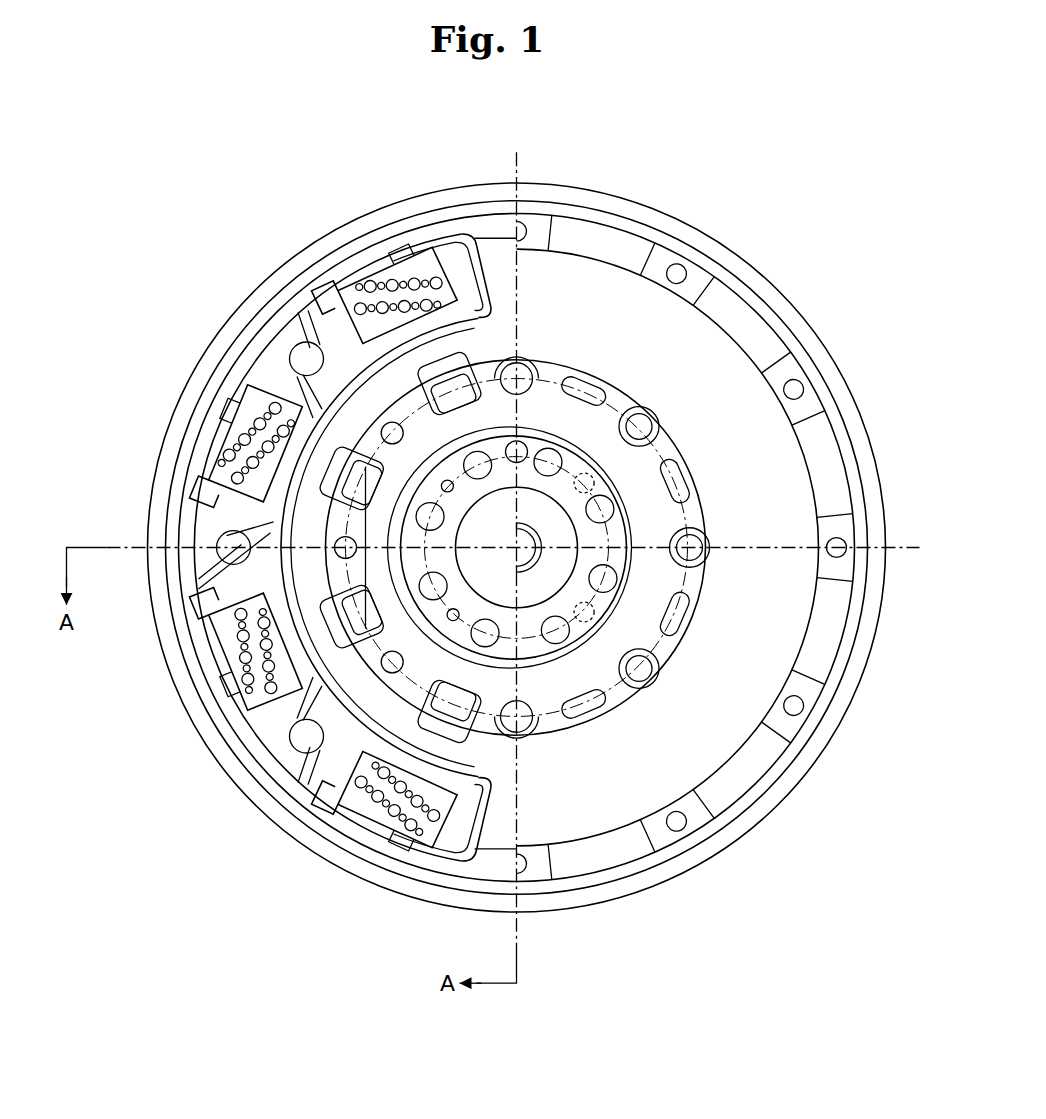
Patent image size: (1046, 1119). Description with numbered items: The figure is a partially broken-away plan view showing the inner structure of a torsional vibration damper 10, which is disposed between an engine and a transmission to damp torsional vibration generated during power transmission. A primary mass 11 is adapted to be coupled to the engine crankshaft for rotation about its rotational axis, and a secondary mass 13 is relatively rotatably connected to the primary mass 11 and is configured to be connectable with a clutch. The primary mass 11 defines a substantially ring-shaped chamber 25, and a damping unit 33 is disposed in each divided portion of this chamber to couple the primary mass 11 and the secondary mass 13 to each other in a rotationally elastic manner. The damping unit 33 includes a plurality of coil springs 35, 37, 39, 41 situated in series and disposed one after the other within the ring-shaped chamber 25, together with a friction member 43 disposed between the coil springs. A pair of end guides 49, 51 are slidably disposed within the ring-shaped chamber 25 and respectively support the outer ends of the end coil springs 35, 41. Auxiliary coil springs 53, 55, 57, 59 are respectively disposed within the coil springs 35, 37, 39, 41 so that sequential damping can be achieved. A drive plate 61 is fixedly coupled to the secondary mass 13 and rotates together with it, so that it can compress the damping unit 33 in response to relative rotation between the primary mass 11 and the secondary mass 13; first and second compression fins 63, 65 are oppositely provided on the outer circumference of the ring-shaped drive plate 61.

The torsional vibration damper 10 is at (517, 543).
The primary mass 11 is at (511, 548).
The secondary mass 13 is at (517, 548).
The ring-shaped chamber 25 is at (205, 628).
The damping unit 33 is at (407, 545).
The coil spring 35 is at (385, 252).
The coil spring 37 is at (214, 445).
The coil spring 39 is at (205, 648).
The coil spring 41 is at (378, 823).
The friction member 43 is at (274, 547).
The end guide 49 is at (372, 235).
The end guide 51 is at (374, 858).
The auxiliary coil spring 53 is at (356, 252).
The auxiliary coil spring 55 is at (205, 443).
The auxiliary coil spring 57 is at (198, 651).
The auxiliary coil spring 59 is at (388, 838).
The drive plate 61 is at (304, 592).
The first compression fin 63 is at (455, 231).
The second compression fin 65 is at (455, 861).